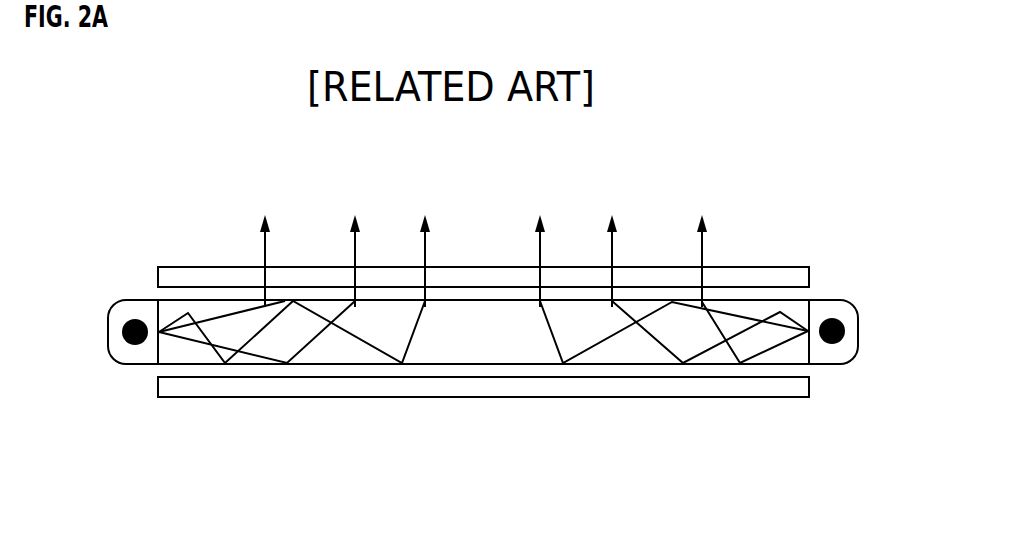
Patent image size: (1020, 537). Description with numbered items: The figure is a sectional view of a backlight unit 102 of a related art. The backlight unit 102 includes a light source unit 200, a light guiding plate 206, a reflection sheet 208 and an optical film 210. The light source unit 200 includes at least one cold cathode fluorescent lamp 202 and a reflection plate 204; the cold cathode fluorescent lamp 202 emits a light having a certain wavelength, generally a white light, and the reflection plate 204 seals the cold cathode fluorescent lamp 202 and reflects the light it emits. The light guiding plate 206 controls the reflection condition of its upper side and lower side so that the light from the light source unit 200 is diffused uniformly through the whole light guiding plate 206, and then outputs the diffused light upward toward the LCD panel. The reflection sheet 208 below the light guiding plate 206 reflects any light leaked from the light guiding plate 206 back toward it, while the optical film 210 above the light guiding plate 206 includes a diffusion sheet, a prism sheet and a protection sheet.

The light source unit 200 is at (133, 282).
The backlight unit 102 is at (727, 236).
The optical film 210 is at (767, 270).
The light guiding plate 206 is at (472, 353).
The reflection sheet 208 is at (377, 390).
The cold cathode fluorescent lamp 202 is at (133, 345).
The reflection plate 204 is at (857, 332).